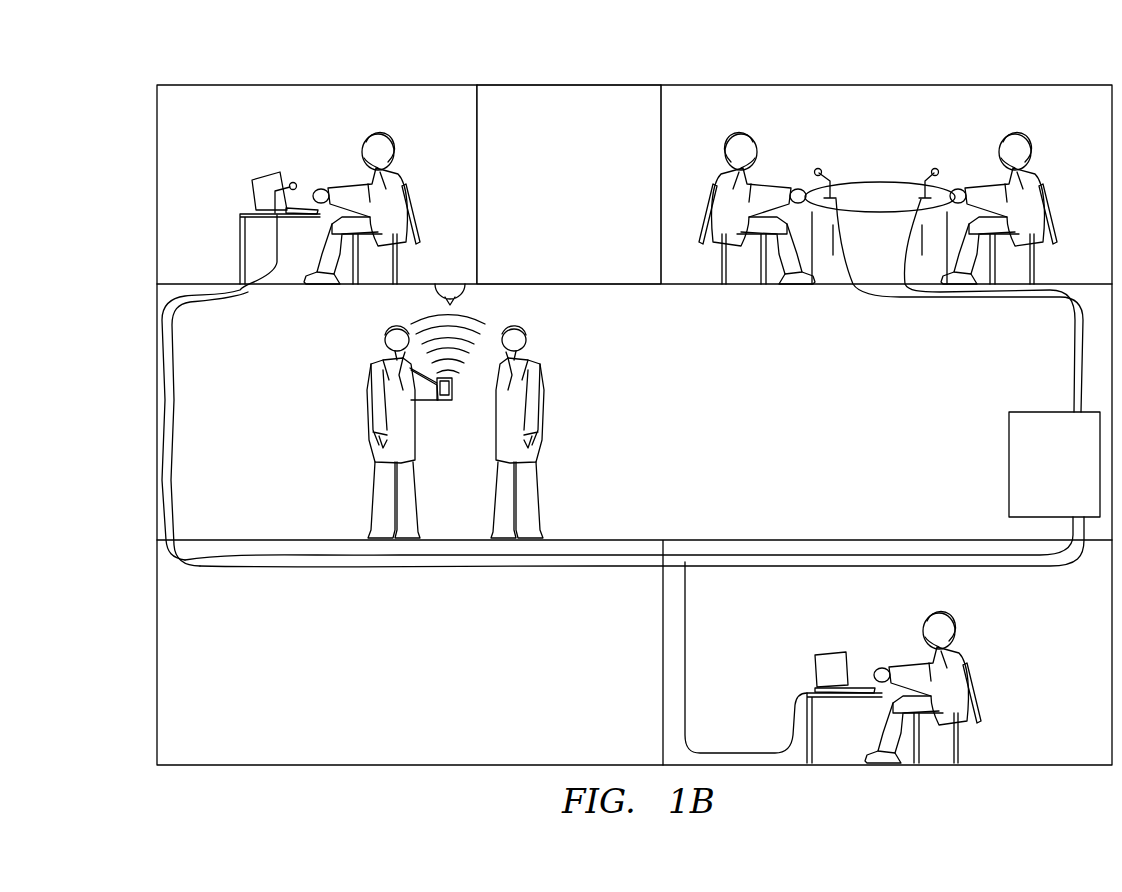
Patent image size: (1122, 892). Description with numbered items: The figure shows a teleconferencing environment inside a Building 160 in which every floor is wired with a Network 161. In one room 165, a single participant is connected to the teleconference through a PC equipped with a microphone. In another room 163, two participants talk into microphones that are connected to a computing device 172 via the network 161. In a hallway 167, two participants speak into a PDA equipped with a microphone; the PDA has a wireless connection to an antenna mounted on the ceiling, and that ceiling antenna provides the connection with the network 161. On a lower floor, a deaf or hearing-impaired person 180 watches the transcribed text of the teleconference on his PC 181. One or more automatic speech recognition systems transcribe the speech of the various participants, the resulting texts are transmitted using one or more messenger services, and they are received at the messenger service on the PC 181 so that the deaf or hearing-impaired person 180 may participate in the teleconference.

The Building 160 is at (565, 94).
The room 165 is at (312, 94).
The room 163 is at (859, 92).
The hallway 167 is at (192, 420).
The computing device 172 is at (1010, 459).
The Network 161 is at (418, 568).
The PC 181 is at (822, 660).
The deaf or hearing-impaired person 180 is at (955, 628).